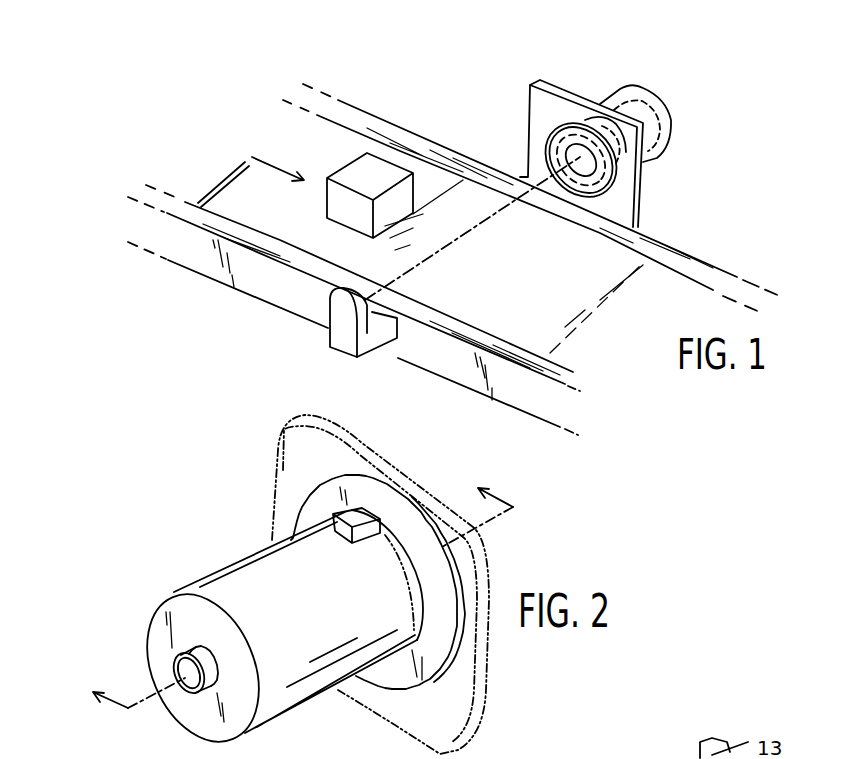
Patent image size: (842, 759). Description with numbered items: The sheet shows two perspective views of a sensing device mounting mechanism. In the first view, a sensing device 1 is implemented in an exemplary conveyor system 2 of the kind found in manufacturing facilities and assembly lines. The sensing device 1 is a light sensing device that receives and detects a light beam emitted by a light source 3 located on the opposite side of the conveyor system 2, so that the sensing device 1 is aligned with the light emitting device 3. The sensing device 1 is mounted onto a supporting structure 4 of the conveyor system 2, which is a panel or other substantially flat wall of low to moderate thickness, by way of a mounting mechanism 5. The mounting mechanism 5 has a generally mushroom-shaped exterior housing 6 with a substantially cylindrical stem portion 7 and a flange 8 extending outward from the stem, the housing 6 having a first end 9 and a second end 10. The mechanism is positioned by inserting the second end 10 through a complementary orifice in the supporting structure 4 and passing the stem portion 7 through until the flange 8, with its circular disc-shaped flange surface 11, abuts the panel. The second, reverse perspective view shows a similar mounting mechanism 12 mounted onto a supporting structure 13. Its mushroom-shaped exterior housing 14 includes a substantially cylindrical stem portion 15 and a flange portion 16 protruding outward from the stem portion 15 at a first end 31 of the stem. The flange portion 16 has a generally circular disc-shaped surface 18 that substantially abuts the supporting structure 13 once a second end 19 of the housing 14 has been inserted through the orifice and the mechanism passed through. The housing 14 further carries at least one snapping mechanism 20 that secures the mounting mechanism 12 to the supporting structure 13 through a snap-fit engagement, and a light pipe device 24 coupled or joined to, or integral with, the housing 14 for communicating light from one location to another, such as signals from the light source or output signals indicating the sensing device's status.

In FIG. 1, the sensing device 1 is at (638, 87).
In FIG. 1, the conveyor system 2 is at (362, 38).
In FIG. 1, the light source 3 is at (336, 314).
In FIG. 2, the light source 3 is at (295, 590).
In FIG. 1, the supporting structure 4 is at (538, 83).
In FIG. 1, the mounting mechanism 5 is at (652, 158).
In FIG. 1, the exterior housing 6 is at (604, 106).
In FIG. 1, the stem portion 7 is at (614, 95).
In FIG. 1, the flange 8 is at (549, 140).
In FIG. 1, the first end 9 is at (553, 155).
In FIG. 1, the second end 10 is at (670, 108).
In FIG. 1, the flange surface 11 is at (553, 161).
In FIG. 2, the mounting mechanism 12 is at (206, 518).
In FIG. 2, the supporting structure 13 is at (447, 695).
In FIG. 2, the exterior housing 14 is at (230, 585).
In FIG. 2, the stem portion 15 is at (270, 623).
In FIG. 2, the flange portion 16 is at (328, 515).
In FIG. 2, the disc-shaped surface 18 is at (437, 577).
In FIG. 2, the second end 19 is at (148, 615).
In FIG. 2, the snapping mechanism 20 is at (360, 512).
In FIG. 2, the light pipe device 24 is at (176, 651).
In FIG. 2, the first end 31 is at (413, 527).